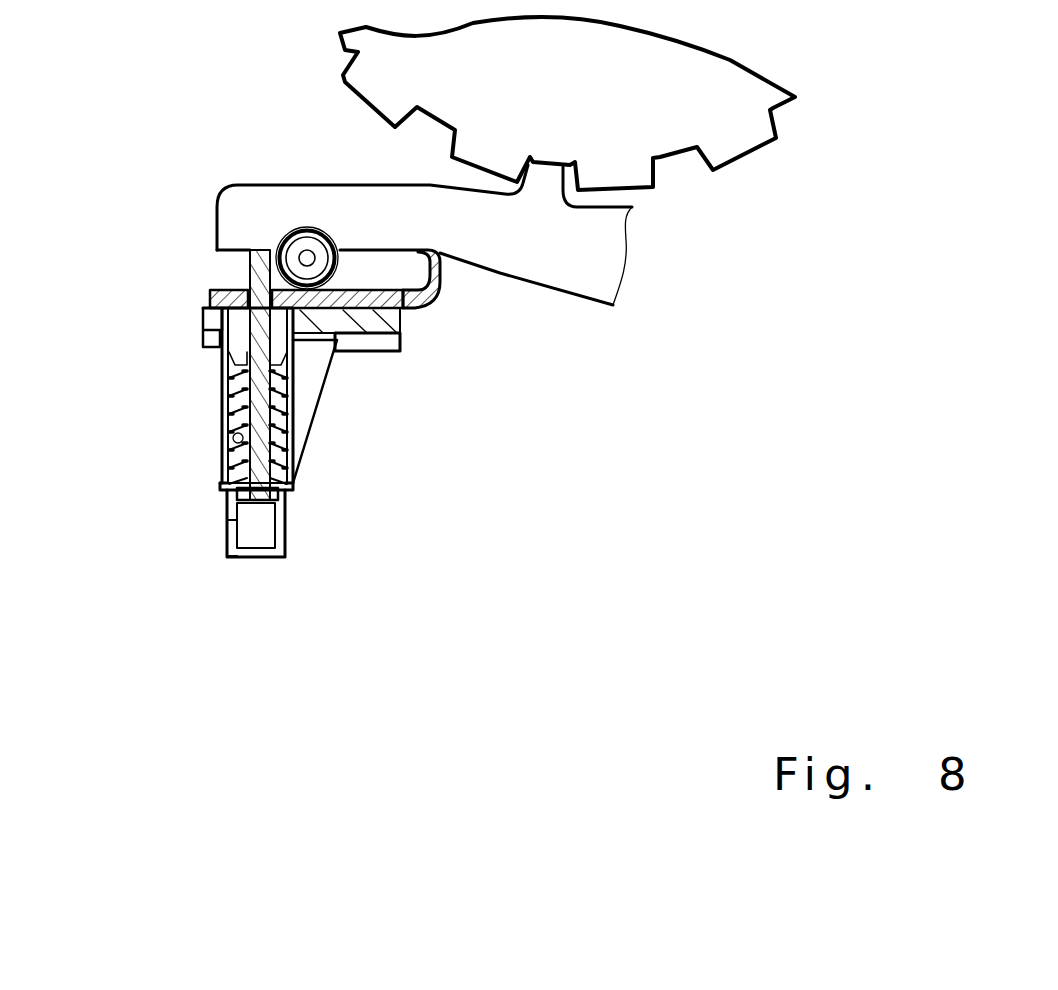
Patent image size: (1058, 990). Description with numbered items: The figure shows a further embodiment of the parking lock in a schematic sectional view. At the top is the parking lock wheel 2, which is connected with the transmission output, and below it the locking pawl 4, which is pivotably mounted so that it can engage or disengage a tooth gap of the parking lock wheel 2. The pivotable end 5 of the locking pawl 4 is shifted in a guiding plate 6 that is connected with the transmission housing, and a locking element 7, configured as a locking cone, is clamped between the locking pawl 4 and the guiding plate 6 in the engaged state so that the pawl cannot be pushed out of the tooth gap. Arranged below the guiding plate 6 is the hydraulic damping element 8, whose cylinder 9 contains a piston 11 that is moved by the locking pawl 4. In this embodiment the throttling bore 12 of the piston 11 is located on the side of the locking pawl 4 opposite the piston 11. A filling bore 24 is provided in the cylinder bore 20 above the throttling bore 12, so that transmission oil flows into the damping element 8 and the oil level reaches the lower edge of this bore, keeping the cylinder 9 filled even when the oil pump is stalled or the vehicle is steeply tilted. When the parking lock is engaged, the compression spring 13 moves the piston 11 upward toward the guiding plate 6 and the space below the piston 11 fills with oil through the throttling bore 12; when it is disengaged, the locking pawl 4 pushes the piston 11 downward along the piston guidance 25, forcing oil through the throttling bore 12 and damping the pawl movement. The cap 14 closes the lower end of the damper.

The parking lock wheel 2 is at (687, 98).
The locking pawl 4 is at (540, 243).
The pivotable end 5 is at (222, 252).
The guiding plate 6 is at (212, 290).
The locking element 7 is at (307, 228).
The hydraulic damping element 8 is at (197, 416).
The cylinder 9 is at (224, 544).
The piston 11 is at (232, 503).
The throttling bore 12 is at (291, 488).
The compression spring 13 is at (290, 390).
The cap 14 is at (284, 503).
The cylinder bore 20 is at (302, 402).
The filling bore 24 is at (230, 448).
The piston guidance 25 is at (221, 367).